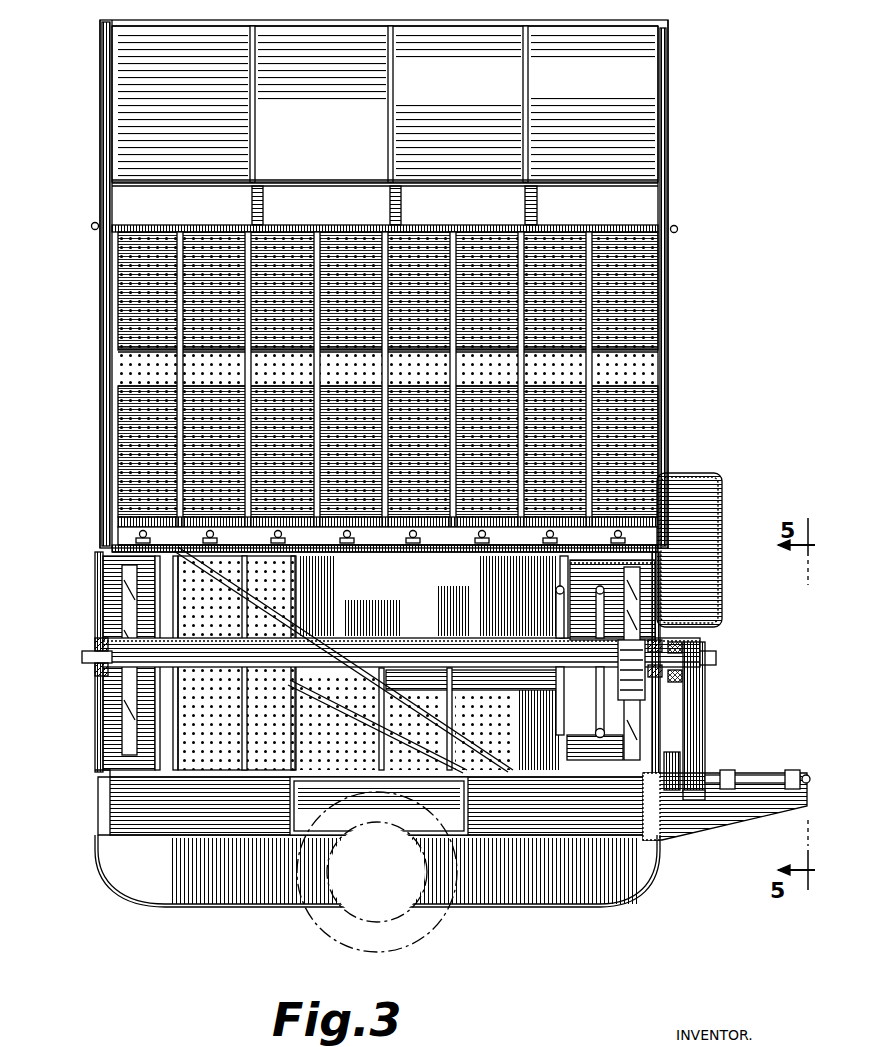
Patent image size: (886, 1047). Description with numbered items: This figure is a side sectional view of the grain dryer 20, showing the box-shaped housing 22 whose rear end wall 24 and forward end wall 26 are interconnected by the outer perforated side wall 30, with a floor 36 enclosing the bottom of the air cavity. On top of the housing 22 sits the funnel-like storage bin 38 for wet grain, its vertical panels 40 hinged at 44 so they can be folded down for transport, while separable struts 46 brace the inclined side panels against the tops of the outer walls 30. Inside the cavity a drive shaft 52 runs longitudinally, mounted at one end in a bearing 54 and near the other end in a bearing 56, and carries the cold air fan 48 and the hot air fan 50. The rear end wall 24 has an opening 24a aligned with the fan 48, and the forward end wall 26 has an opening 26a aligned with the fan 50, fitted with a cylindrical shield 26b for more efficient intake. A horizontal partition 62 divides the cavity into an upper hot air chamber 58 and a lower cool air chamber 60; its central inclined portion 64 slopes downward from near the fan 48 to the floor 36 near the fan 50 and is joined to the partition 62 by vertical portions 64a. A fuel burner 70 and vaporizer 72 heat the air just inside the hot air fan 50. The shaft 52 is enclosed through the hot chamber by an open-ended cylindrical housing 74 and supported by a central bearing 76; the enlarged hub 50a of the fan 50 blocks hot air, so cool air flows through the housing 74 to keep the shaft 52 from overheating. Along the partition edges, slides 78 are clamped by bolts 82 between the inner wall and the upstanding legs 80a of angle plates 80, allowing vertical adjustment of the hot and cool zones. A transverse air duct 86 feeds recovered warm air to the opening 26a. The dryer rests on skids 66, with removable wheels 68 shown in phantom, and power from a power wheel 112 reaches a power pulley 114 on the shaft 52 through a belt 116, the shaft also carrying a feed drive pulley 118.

The grain dryer 20 is at (760, 174).
The housing 22 is at (676, 318).
The rear end wall 24 is at (100, 288).
The opening 24a is at (100, 553).
The forward end wall 26 is at (668, 395).
The opening 26a is at (648, 561).
The cylindrical shield 26b is at (556, 556).
The outer perforated side wall 30 is at (652, 278).
The floor 36 is at (130, 785).
The storage bin 38 is at (670, 92).
The vertical panel 40 is at (668, 162).
The hinge 44 is at (93, 223).
The strut 46 is at (252, 202).
The cold air fan 48 is at (122, 600).
The hot air fan 50 is at (642, 586).
The enlarged hub 50a is at (644, 605).
The drive shaft 52 is at (410, 624).
The bearing 54 is at (82, 657).
The bearing 56 is at (662, 640).
The hot air chamber 58 is at (193, 398).
The cool air chamber 60 is at (200, 722).
The horizontal partition 62 is at (283, 545).
The inclined portion 64 is at (432, 718).
The vertical portion 64a is at (428, 588).
The skid 66 is at (535, 905).
The removable wheel 68 is at (418, 944).
The fuel burner 70 is at (594, 700).
The vaporizer 72 is at (556, 596).
The cylindrical housing 74 is at (330, 640).
The central bearing 76 is at (294, 640).
The slide 78 is at (302, 518).
The angle plate 80 is at (232, 545).
The upstanding leg 80a is at (384, 545).
The bolt 82 is at (470, 540).
The transverse air duct 86 is at (700, 473).
The power wheel 112 is at (682, 748).
The power pulley 114 is at (716, 659).
The belt 116 is at (705, 714).
The feed drive pulley 118 is at (682, 680).